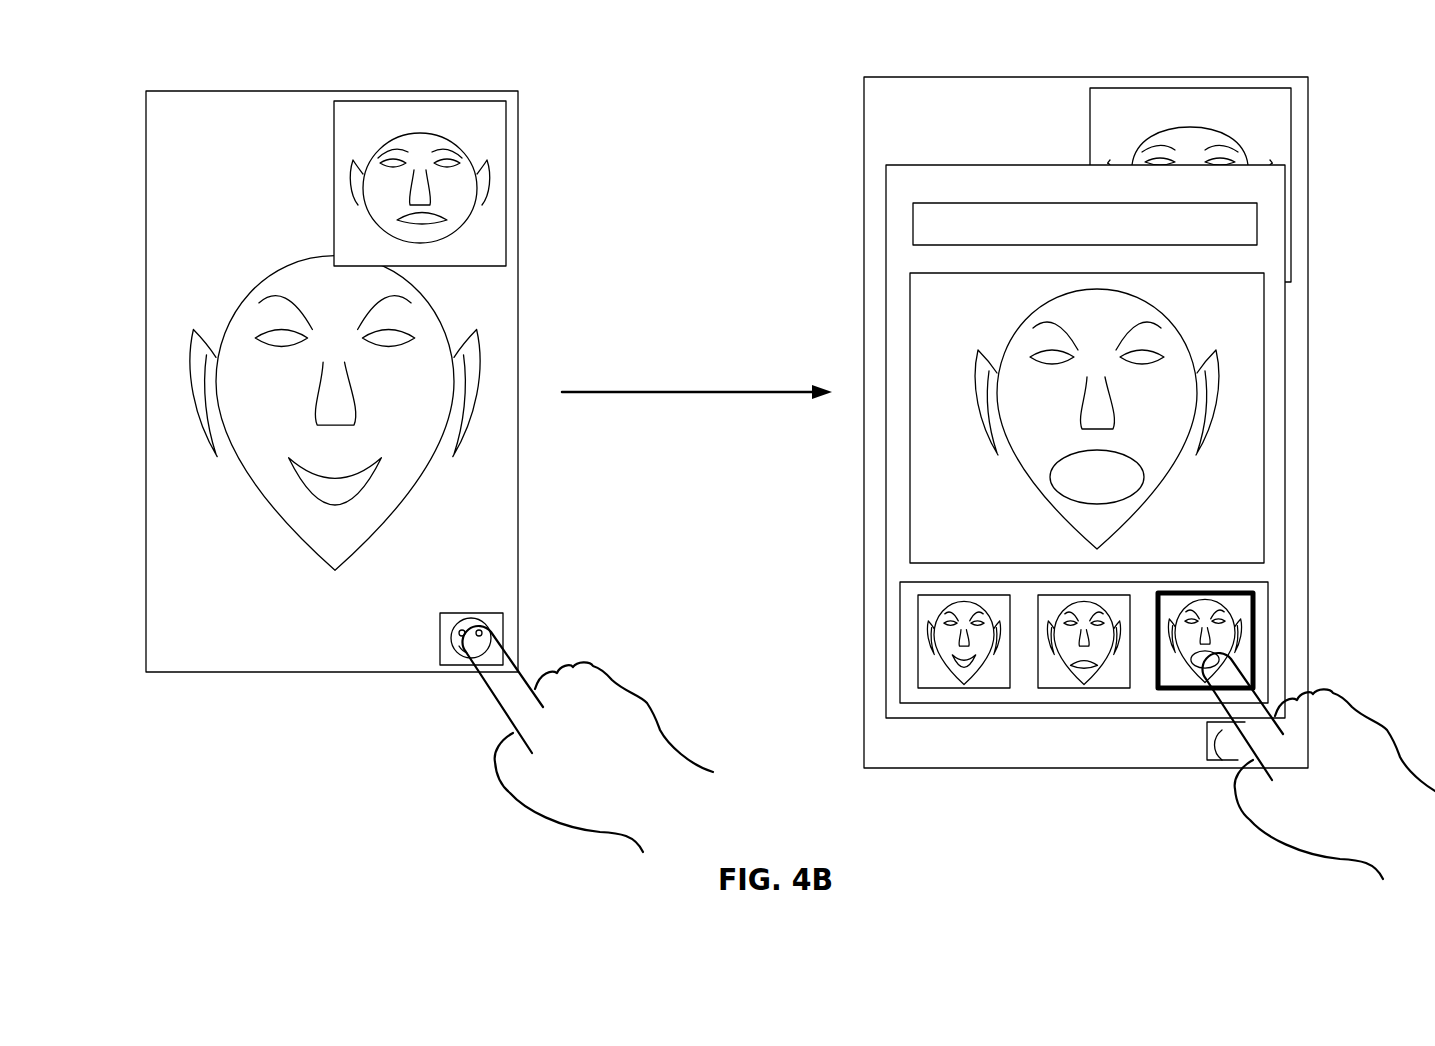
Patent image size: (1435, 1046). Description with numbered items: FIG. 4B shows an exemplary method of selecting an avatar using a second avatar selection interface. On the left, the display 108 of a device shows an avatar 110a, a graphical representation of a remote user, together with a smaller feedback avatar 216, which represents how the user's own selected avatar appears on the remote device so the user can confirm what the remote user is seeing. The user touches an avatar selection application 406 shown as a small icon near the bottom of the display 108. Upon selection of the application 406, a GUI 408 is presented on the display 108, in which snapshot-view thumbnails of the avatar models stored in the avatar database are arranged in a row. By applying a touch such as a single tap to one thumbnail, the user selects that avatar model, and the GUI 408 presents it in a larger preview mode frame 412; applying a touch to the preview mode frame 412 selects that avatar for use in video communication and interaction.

The display 108 is at (208, 90).
The feedback avatar 216 is at (333, 194).
The avatar 110a is at (270, 523).
The avatar selection application 406 is at (505, 628).
The GUI 408 is at (1106, 484).
The preview mode frame 412 is at (1247, 445).